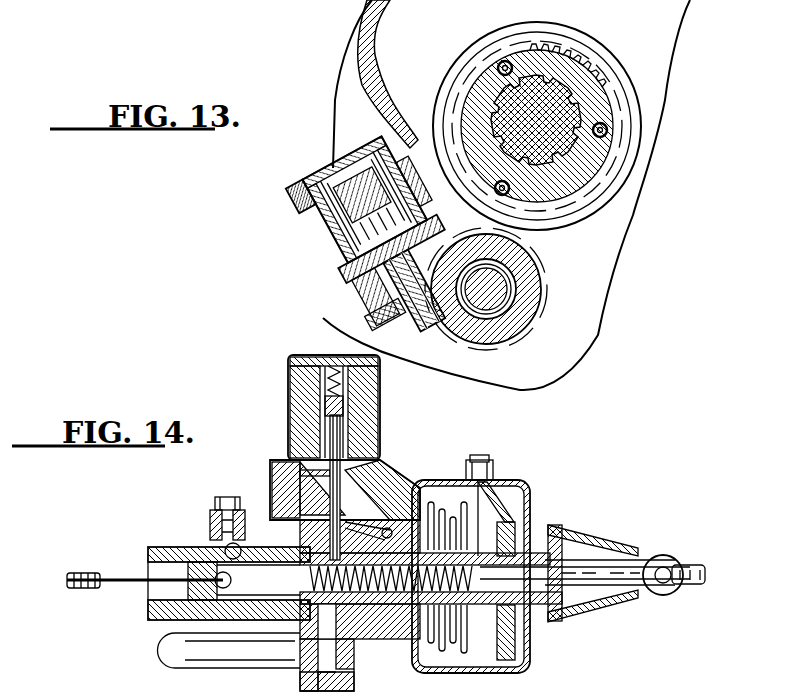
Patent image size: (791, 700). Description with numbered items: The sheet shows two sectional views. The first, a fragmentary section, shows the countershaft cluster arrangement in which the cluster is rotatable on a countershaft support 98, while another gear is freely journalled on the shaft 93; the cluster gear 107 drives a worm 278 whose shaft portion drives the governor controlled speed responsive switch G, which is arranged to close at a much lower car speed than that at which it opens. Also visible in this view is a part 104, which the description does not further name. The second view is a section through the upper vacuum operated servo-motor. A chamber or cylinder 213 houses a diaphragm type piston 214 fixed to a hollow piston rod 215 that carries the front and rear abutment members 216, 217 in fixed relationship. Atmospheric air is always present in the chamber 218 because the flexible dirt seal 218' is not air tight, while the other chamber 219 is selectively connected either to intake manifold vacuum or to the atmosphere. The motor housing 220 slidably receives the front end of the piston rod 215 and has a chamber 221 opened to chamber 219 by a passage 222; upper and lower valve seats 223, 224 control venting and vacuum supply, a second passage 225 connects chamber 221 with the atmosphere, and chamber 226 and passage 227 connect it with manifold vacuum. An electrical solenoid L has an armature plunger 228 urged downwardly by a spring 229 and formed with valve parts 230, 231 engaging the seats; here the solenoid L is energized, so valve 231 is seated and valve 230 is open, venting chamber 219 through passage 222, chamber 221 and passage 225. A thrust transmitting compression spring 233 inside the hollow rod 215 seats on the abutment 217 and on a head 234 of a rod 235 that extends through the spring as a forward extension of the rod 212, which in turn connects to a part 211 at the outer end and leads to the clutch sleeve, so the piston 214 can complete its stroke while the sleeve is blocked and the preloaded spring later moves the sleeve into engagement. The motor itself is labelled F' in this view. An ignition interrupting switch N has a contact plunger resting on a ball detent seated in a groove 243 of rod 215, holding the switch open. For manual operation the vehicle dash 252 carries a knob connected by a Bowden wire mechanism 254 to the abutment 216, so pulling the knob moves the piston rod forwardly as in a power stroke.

In FIG. 13, the gear disc 104 is at (598, 60).
In FIG. 13, the shaft 93 is at (536, 120).
In FIG. 13, the gear 107 is at (541, 286).
In FIG. 13, the countershaft support 98 is at (486, 289).
In FIG. 13, the worm 278 is at (430, 327).
In FIG. 13, the governor controlled speed responsive switch G is at (285, 185).
In FIG. 14, the hollow piston rod 215 is at (448, 515).
In FIG. 14, the vehicle dash 252 is at (456, 635).
In FIG. 14, the chamber 219 is at (445, 660).
In FIG. 14, the chamber or cylinder 213 is at (508, 478).
In FIG. 14, the piston 214 is at (518, 500).
In FIG. 14, the fuel chamber F' is at (463, 451).
In FIG. 14, the rear abutment member 217 is at (495, 573).
In FIG. 14, the head 234 is at (362, 579).
In FIG. 14, the rod 212 is at (634, 560).
In FIG. 14, the nut 211 is at (685, 568).
In FIG. 14, the chamber 218 is at (586, 617).
In FIG. 14, the flexible dirt seal 218' is at (593, 530).
In FIG. 14, the rod 235 is at (581, 597).
In FIG. 14, the front abutment member 216 is at (190, 594).
In FIG. 14, the Bowden wire mechanism 254 is at (133, 576).
In FIG. 14, the chamber 226 is at (245, 552).
In FIG. 14, the lower valve seat 224 is at (258, 490).
In FIG. 14, the ignition interrupting switch N is at (215, 495).
In FIG. 14, the upper valve seat 223 is at (285, 460).
In FIG. 14, the second passage 225 is at (280, 478).
In FIG. 14, the passage 222 is at (430, 478).
In FIG. 14, the motor housing 220 is at (420, 456).
In FIG. 14, the valve part 231 is at (361, 487).
In FIG. 14, the spring 229 is at (338, 356).
In FIG. 14, the electrical solenoid L is at (290, 372).
In FIG. 14, the armature plunger 228 is at (378, 403).
In FIG. 14, the chamber 221 is at (382, 462).
In FIG. 14, the valve part 230 is at (335, 455).
In FIG. 14, the thrust transmitting compression spring 233 is at (385, 612).
In FIG. 14, the groove 243 is at (237, 618).
In FIG. 14, the passage 227 is at (270, 630).